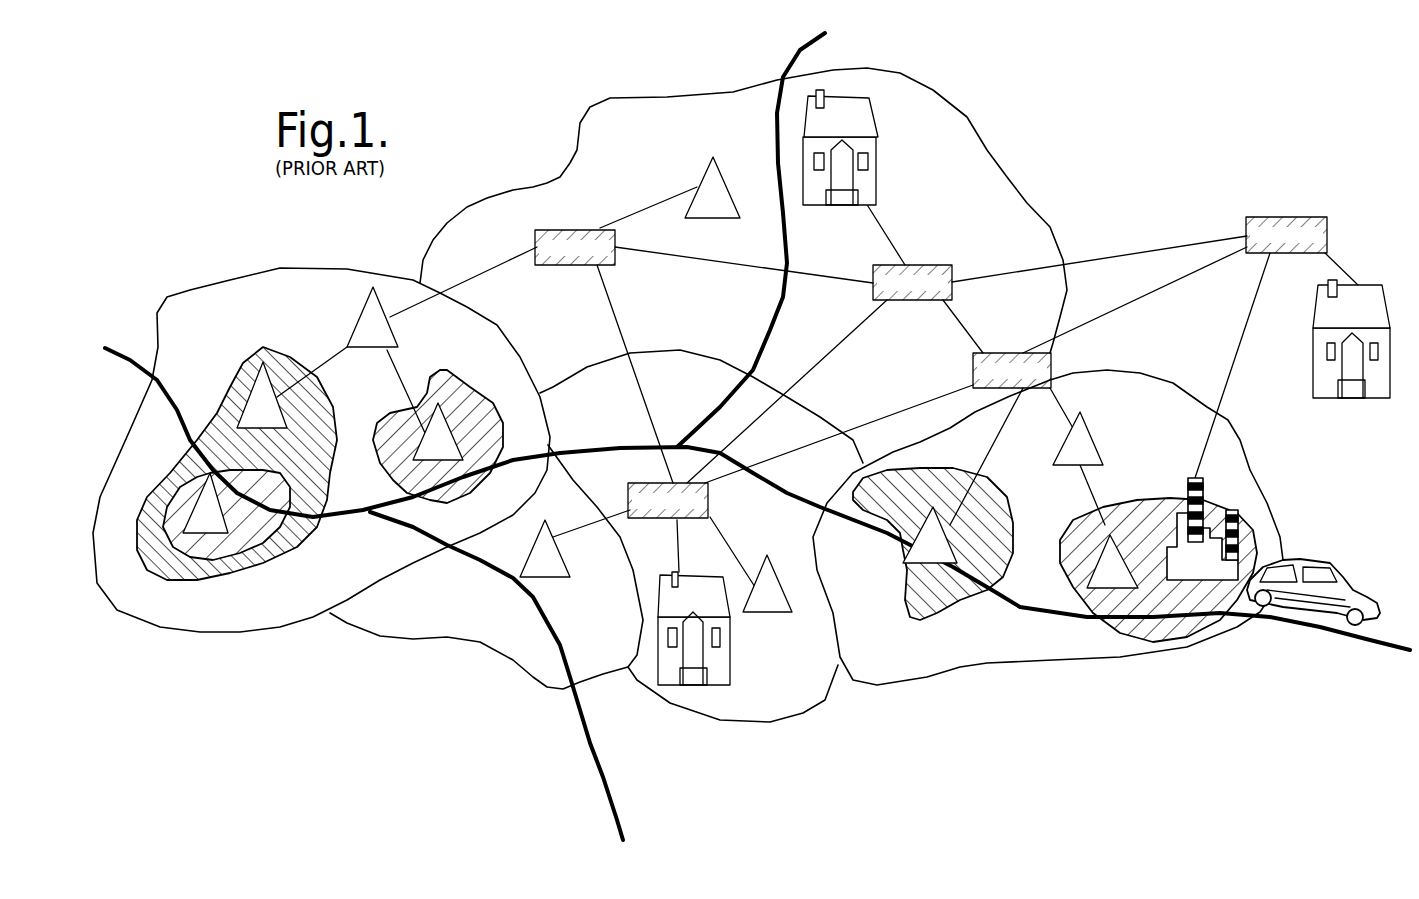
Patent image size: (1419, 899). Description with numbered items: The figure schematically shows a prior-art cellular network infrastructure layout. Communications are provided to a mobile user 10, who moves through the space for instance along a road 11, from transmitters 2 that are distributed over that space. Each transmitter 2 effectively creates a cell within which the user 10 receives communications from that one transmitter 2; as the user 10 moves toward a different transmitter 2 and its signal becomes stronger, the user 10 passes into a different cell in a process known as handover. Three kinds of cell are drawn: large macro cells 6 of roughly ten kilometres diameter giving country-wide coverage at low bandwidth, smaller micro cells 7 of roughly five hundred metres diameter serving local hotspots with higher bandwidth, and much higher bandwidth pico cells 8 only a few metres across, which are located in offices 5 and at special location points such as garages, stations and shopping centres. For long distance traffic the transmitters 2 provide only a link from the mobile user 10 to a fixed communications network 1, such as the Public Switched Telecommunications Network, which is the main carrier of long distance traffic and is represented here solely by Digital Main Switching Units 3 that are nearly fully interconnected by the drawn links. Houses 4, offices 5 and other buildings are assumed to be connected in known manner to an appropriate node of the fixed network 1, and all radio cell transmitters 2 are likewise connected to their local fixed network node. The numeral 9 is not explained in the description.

The fixed communications network 1 is at (817, 387).
The transmitter 2 is at (660, 333).
The Digital Main Switching Unit 3 is at (931, 327).
The house 4 is at (1024, 373).
The office 5 is at (1245, 529).
The macro cell 6 is at (688, 515).
The micro cell 7 is at (544, 534).
The pico cell 8 is at (704, 589).
The network boundary / link 9 is at (743, 263).
The mobile user 10 is at (1324, 582).
The road 11 is at (757, 436).